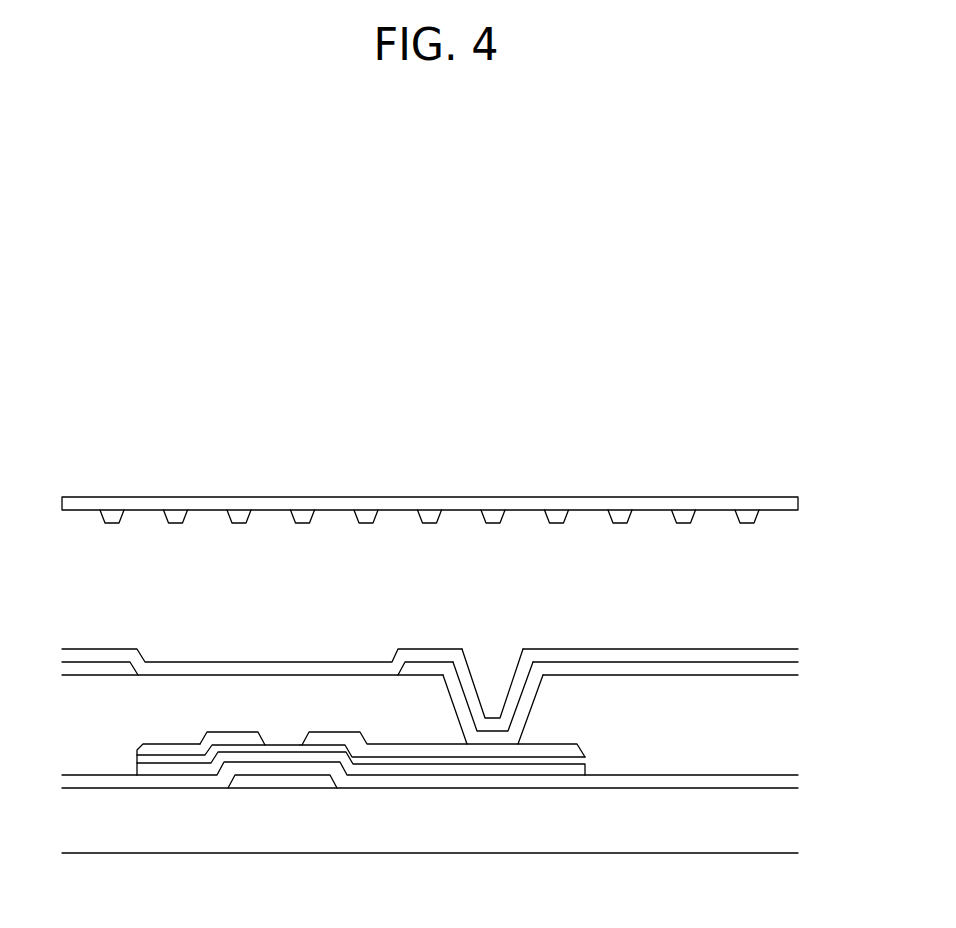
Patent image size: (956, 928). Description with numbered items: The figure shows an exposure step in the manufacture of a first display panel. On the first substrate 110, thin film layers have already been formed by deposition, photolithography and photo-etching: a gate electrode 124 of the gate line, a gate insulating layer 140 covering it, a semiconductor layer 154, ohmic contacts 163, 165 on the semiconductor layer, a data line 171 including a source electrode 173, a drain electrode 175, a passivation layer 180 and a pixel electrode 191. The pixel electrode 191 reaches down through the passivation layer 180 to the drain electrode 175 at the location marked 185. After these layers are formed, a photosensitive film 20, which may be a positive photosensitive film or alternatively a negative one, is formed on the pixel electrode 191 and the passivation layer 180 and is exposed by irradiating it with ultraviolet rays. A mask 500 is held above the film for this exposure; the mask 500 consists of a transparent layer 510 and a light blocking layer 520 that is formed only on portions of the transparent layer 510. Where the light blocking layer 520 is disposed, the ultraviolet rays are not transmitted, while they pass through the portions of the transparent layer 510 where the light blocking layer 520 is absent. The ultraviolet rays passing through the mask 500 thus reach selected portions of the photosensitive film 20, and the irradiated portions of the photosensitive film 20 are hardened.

The photosensitive film 20 is at (716, 655).
The first substrate 110 is at (722, 832).
The gate electrode 124 is at (275, 783).
The gate insulating layer 140 is at (640, 780).
The semiconductor layer 154 is at (313, 758).
The ohmic contact 163 is at (200, 760).
The ohmic contact 165 is at (398, 760).
The data line 171 is at (157, 752).
The source electrode 173 is at (243, 735).
The drain electrode 175 is at (528, 750).
The passivation layer 180 is at (640, 700).
The contact hole 185 is at (530, 710).
The pixel electrode 191 is at (80, 665).
The mask 500 is at (200, 433).
The transparent layer 510 is at (213, 503).
The light blocking layer 520 is at (302, 517).